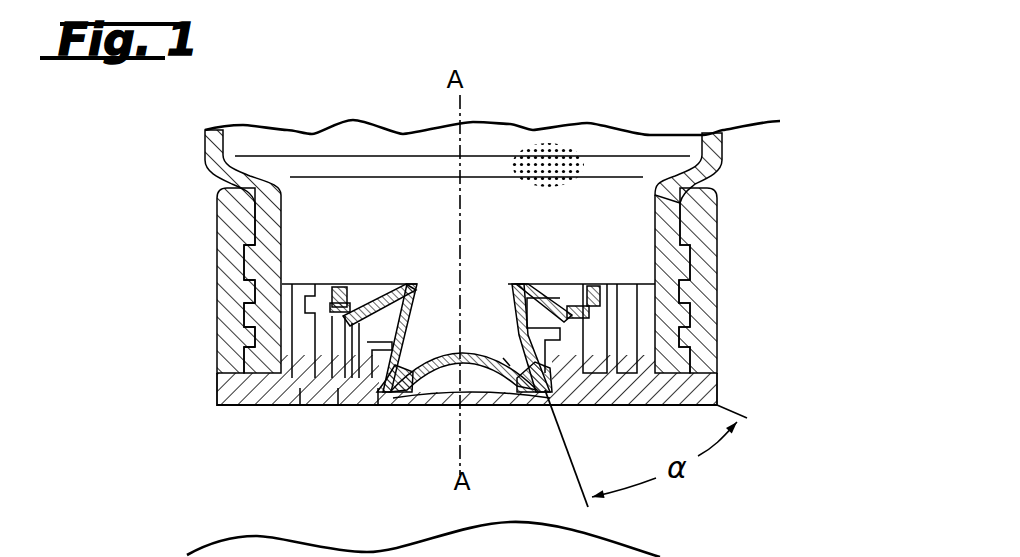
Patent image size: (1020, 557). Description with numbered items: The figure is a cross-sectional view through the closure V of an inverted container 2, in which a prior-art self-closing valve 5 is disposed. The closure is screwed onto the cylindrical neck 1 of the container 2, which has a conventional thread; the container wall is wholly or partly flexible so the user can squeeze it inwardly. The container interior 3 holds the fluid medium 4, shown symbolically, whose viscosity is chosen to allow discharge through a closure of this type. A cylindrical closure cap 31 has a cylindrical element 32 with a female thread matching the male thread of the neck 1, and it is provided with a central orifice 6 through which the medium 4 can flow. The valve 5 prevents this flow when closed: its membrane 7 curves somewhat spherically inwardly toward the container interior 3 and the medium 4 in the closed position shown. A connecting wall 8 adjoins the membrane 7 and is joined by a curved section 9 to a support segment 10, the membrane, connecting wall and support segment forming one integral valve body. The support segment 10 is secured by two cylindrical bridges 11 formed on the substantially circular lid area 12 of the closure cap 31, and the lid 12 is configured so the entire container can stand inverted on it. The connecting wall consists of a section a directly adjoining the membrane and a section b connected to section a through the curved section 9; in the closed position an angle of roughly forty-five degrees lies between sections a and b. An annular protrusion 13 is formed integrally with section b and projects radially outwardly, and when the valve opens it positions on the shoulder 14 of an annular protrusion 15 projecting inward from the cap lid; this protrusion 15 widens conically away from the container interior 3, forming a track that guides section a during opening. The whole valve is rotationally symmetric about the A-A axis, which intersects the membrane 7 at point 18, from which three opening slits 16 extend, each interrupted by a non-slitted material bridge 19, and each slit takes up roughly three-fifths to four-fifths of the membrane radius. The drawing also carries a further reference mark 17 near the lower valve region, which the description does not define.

The neck 1 is at (700, 266).
The container 2 is at (781, 121).
The container interior 3 is at (285, 133).
The medium 4 is at (548, 165).
The self-closing valve 5 is at (543, 284).
The central orifice 6 is at (392, 400).
The membrane 7 is at (445, 372).
The connecting wall 8 is at (416, 286).
The curved section 9 is at (404, 284).
The support segment 10 is at (324, 283).
The cylindrical bridges 11 is at (349, 333).
The lid area 12 is at (298, 405).
The annular protrusion 13 is at (386, 287).
The shoulder 14 is at (338, 405).
The annular protrusion 15 is at (378, 405).
The opening slit 16 is at (526, 405).
The inclined wall 17 is at (566, 403).
The intersection point 18 is at (470, 372).
The material bridge 19 is at (503, 358).
The closure cap 31 is at (705, 319).
The cylindrical element 32 is at (705, 211).
The section a is at (390, 330).
The section b is at (347, 284).
The closure V is at (197, 360).